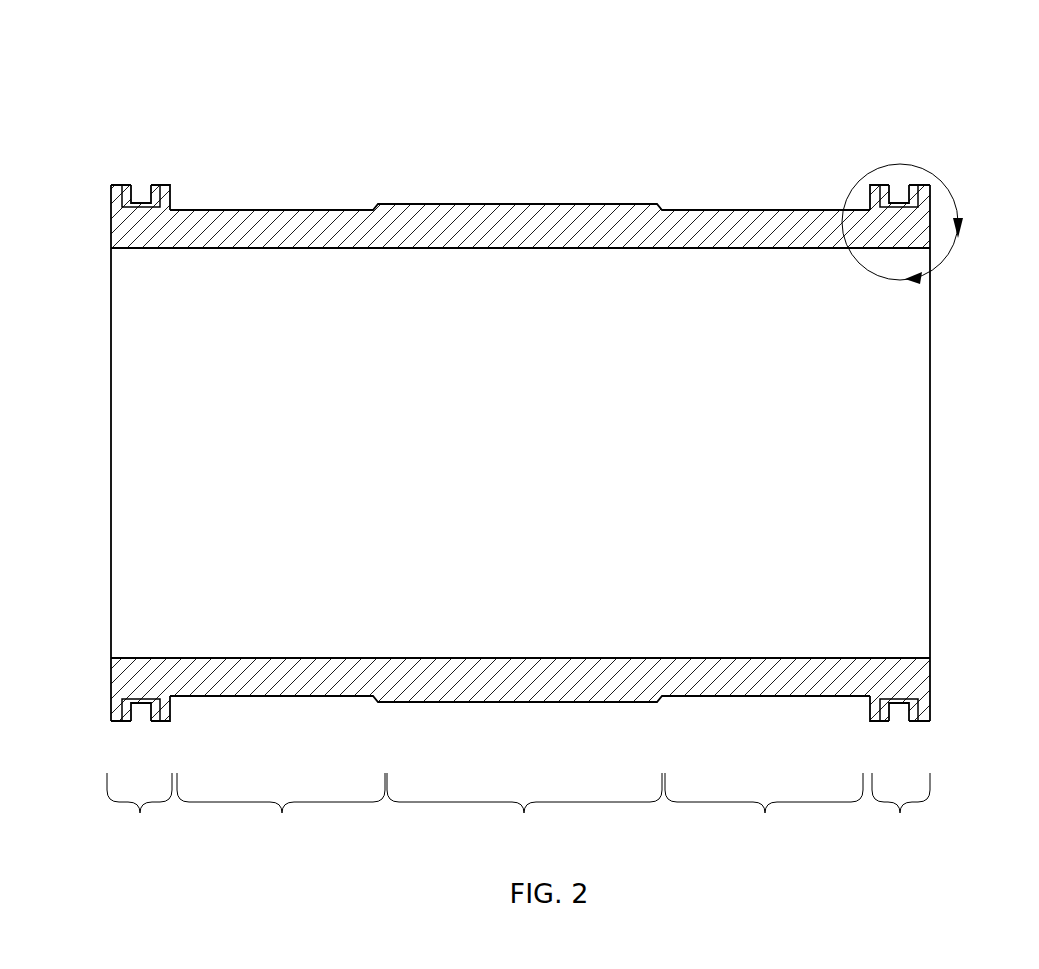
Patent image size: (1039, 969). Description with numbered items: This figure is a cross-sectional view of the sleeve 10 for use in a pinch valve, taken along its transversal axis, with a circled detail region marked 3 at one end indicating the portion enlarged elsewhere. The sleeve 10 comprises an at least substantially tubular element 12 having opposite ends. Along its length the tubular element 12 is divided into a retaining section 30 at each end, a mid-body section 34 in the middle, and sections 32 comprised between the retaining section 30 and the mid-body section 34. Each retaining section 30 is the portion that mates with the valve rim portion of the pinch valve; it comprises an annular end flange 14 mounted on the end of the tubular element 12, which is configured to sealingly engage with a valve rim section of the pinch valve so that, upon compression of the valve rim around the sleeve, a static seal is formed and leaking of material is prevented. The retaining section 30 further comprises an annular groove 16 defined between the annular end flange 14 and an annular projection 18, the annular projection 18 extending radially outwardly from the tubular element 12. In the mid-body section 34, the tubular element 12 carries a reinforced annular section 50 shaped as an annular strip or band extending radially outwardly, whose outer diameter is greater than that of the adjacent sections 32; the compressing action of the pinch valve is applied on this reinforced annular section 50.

The sleeve 10 is at (893, 119).
The tubular element 12 is at (115, 165).
The annular end flange 14 is at (115, 722).
The annular groove 16 is at (141, 712).
The annular projection 18 is at (160, 723).
The retaining section 30 is at (518, 815).
The sections 32 is at (520, 815).
The mid-body section 34 is at (524, 815).
The reinforced annular section 50 is at (534, 704).
The detail view circle (FIG. 3) 3 is at (902, 224).